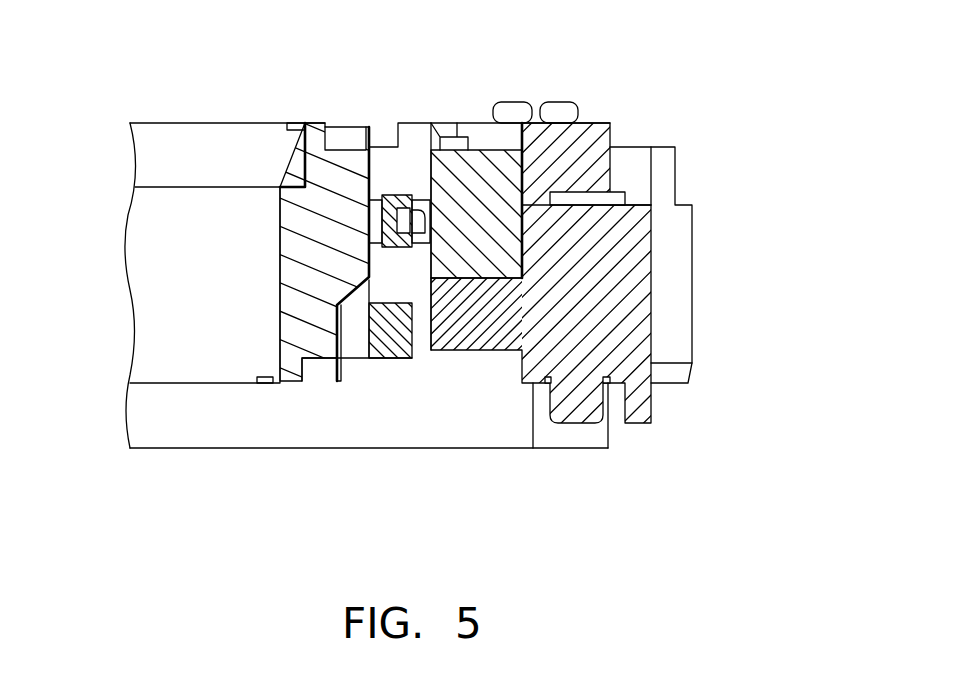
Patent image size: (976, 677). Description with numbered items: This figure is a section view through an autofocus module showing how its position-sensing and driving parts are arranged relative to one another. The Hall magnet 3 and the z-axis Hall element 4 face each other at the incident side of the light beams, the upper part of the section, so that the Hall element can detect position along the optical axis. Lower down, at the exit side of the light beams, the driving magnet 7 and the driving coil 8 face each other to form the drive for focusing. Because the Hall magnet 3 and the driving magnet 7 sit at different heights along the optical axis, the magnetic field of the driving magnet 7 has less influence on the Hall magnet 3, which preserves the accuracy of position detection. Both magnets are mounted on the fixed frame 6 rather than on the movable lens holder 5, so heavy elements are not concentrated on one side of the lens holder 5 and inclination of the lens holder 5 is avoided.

The Hall magnet 3 is at (487, 172).
The z-axis Hall element 4 is at (388, 212).
The lens holder 5 is at (315, 258).
The frame 6 is at (610, 257).
The driving magnet 7 is at (572, 433).
The driving coil 8 is at (392, 332).